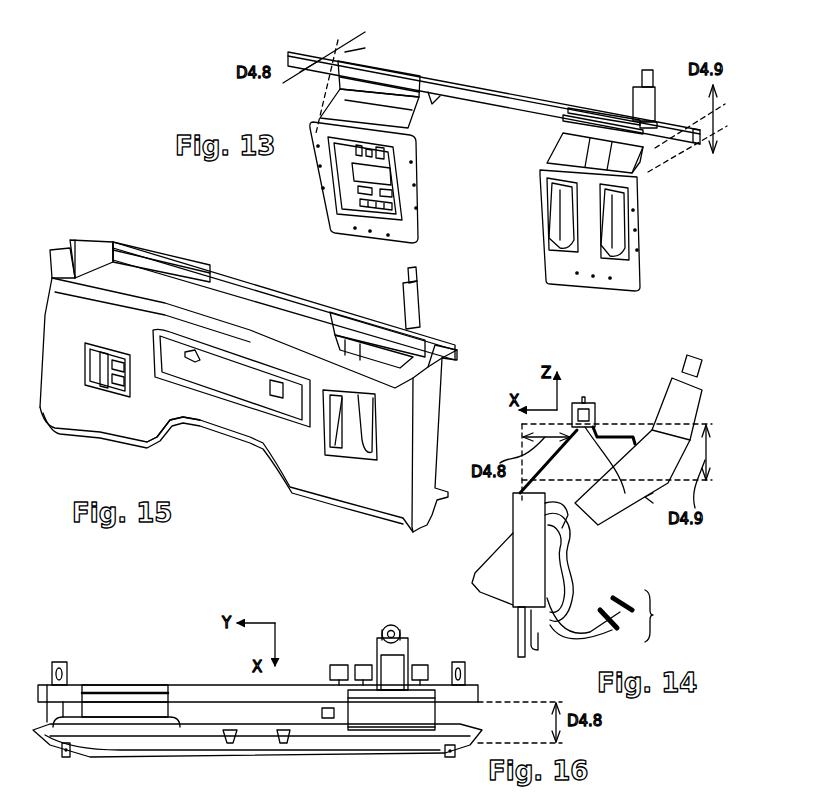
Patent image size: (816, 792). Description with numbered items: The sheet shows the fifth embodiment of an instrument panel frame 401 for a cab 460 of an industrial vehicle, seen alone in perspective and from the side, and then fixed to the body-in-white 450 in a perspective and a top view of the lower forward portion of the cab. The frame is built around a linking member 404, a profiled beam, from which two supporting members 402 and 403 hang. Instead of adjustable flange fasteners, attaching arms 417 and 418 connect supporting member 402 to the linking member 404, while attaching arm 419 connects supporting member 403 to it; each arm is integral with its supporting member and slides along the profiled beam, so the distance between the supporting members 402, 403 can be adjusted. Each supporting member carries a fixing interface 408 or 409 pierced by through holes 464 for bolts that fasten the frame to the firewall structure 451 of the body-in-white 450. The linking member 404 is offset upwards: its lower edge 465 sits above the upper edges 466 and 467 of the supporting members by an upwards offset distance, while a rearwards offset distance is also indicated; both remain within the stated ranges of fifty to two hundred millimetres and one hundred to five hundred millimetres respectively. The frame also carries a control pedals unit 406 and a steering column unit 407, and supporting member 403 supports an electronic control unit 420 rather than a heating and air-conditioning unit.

In FIG. 13, the instrument panel frame 401 is at (607, 52).
In FIG. 14, the instrument panel frame 401 is at (600, 378).
In FIG. 16, the instrument panel frame 401 is at (190, 642).
In FIG. 13, the supporting member 402 is at (595, 191).
In FIG. 16, the supporting member 402 is at (430, 710).
In FIG. 13, the supporting member 403 is at (359, 152).
In FIG. 16, the supporting member 403 is at (190, 718).
In FIG. 13, the linking member 404 is at (510, 95).
In FIG. 15, the linking member 404 is at (275, 300).
In FIG. 14, the linking member 404 is at (596, 418).
In FIG. 16, the linking member 404 is at (222, 695).
In FIG. 14, the control pedals unit 406 is at (580, 575).
In FIG. 16, the control pedals unit 406 is at (365, 672).
In FIG. 13, the steering column unit 407 is at (643, 100).
In FIG. 15, the steering column unit 407 is at (410, 312).
In FIG. 14, the steering column unit 407 is at (678, 402).
In FIG. 16, the steering column unit 407 is at (410, 645).
In FIG. 13, the fixing interface 408 is at (628, 272).
In FIG. 13, the fixing interface 409 is at (313, 150).
In FIG. 13, the attaching arm 417 is at (648, 174).
In FIG. 15, the attaching arm 417 is at (440, 350).
In FIG. 13, the attaching arm 418 is at (570, 148).
In FIG. 15, the attaching arm 418 is at (325, 330).
In FIG. 13, the attaching arm 419 is at (420, 110).
In FIG. 15, the attaching arm 419 is at (218, 290).
In FIG. 13, the electronic control unit 420 is at (358, 176).
In FIG. 15, the body-in-white 450 is at (423, 453).
In FIG. 15, the firewall structure 451 is at (153, 410).
In FIG. 16, the firewall structure 451 is at (233, 748).
In FIG. 15, the cab 460 is at (97, 222).
In FIG. 16, the cab 460 is at (118, 633).
In FIG. 13, the through holes 464 is at (415, 206).
In FIG. 13, the lower edge of the linking member 465 is at (438, 100).
In FIG. 14, the lower edge of the linking member 465 is at (625, 496).
In FIG. 13, the upper edge of supporting member 466 is at (405, 120).
In FIG. 13, the upper edge of supporting member 467 is at (552, 152).